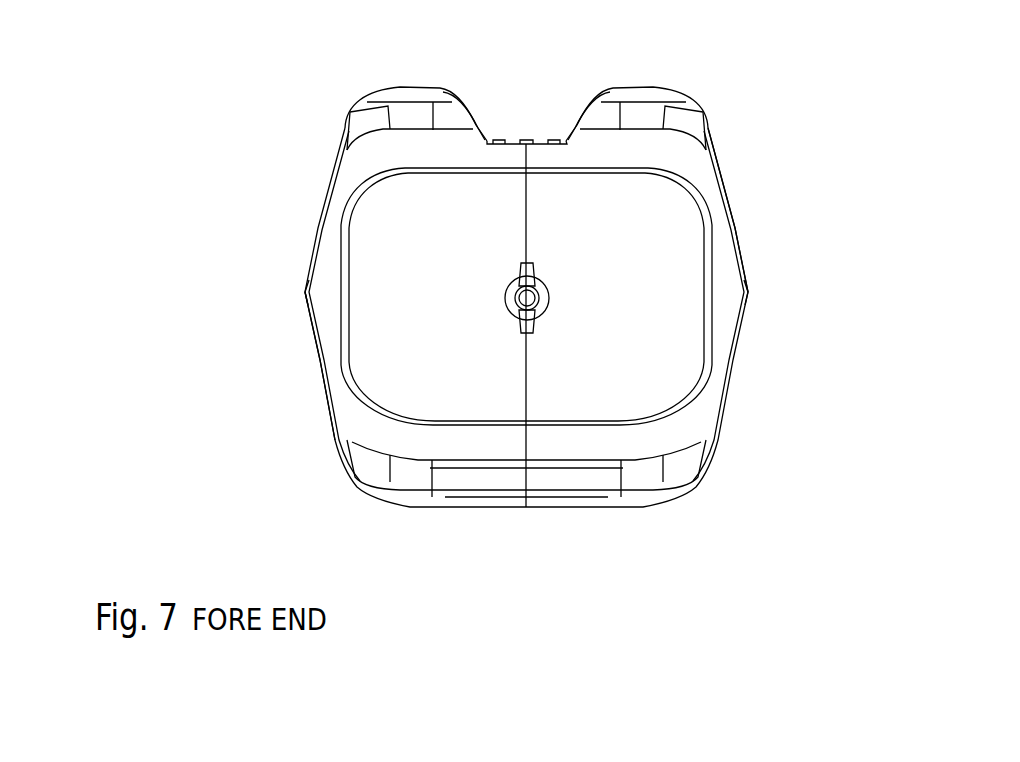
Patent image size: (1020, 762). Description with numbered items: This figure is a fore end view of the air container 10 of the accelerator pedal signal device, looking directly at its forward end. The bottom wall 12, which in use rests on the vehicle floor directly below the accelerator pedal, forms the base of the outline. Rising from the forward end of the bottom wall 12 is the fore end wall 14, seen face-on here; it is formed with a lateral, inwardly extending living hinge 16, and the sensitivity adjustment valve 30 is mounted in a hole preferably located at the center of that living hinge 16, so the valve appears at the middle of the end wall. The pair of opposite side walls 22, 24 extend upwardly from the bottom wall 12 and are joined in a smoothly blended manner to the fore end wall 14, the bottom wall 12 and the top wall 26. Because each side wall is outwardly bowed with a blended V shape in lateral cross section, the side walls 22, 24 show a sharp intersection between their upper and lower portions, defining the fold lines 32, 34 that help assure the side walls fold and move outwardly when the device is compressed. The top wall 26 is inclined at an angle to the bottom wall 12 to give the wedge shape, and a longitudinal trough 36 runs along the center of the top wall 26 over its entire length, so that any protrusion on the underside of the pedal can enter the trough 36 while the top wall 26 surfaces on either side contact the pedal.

The air container 10 is at (252, 278).
The bottom wall 12 is at (660, 504).
The fore end wall 14 is at (337, 222).
The living hinge 16 is at (665, 230).
The side wall 22 is at (323, 382).
The side wall 24 is at (742, 245).
The top wall 26 is at (400, 90).
The sensitivity adjustment valve 30 is at (543, 307).
The fold line 32 is at (305, 293).
The fold line 34 is at (748, 298).
The longitudinal trough 36 is at (525, 142).